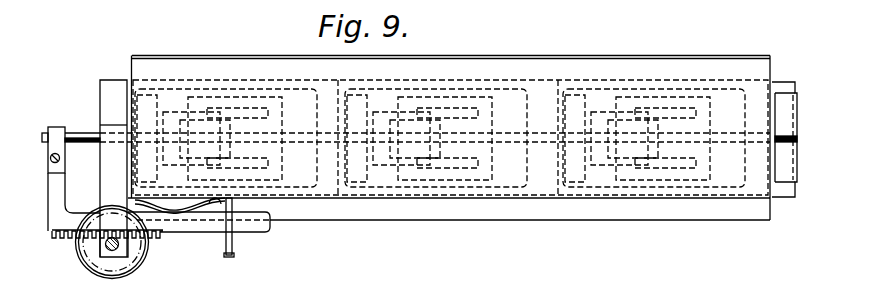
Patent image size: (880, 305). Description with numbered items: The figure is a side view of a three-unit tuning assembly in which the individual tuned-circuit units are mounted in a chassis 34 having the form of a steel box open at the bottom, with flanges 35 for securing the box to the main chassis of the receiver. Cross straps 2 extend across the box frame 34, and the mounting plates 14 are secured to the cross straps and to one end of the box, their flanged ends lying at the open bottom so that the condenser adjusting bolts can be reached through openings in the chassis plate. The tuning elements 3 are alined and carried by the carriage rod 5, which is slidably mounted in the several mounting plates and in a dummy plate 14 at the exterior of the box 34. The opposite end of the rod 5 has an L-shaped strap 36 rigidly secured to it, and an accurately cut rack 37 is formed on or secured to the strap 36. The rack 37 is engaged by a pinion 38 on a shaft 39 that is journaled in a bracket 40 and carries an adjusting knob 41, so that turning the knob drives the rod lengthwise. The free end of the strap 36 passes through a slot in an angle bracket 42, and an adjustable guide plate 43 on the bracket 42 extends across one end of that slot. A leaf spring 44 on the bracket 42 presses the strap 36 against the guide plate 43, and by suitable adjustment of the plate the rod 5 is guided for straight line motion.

The cross strap 2 is at (343, 190).
The tuning element 3 is at (698, 180).
The carriage rod 5 is at (91, 122).
The mounting plate 14 is at (572, 184).
The chassis 34 is at (330, 188).
The flange 35 is at (131, 65).
The L-shaped strap 36 is at (48, 193).
The rack 37 is at (152, 236).
The pinion 38 is at (122, 253).
The shaft 39 is at (112, 250).
The bracket 40 is at (102, 185).
The adjusting knob 41 is at (78, 251).
The angle bracket 42 is at (227, 248).
The adjustable guide plate 43 is at (287, 285).
The leaf spring 44 is at (173, 210).